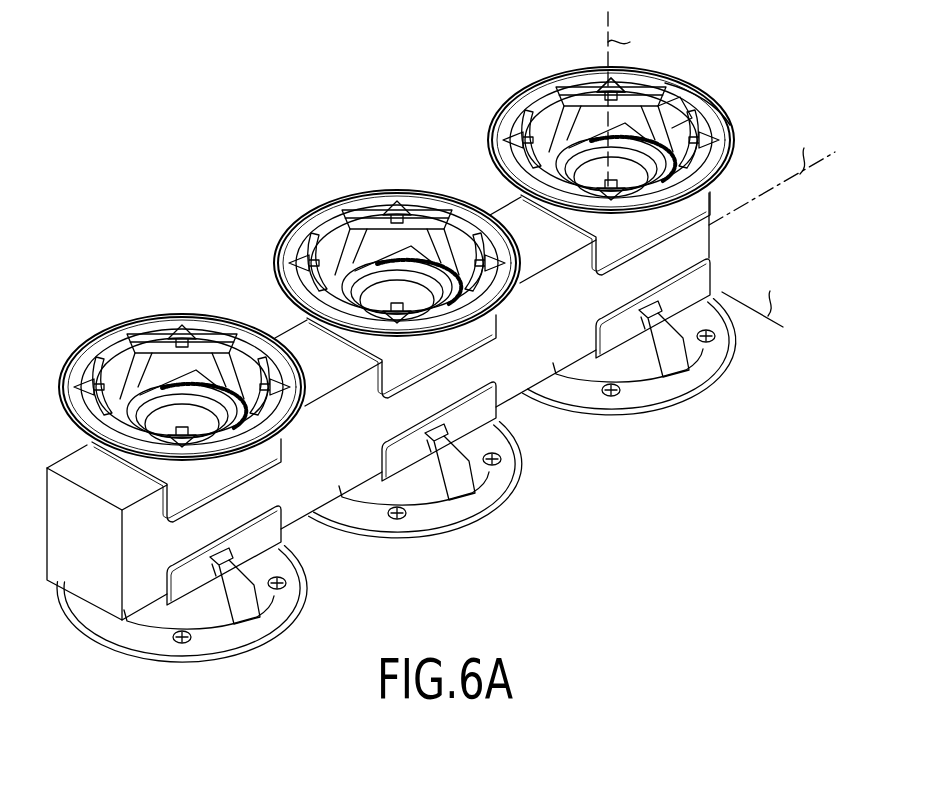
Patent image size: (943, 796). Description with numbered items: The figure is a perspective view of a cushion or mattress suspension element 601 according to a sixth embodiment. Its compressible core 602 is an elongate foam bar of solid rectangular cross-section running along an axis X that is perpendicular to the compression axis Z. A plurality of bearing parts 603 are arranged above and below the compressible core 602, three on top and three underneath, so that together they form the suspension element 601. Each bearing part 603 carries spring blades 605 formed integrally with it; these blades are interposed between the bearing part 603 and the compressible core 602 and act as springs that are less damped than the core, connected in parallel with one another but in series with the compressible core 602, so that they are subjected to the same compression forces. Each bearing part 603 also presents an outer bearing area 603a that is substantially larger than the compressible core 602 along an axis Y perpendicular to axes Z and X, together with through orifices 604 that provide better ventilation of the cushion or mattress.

The cushion or mattress suspension element 601 is at (212, 122).
The compressible core 602 is at (694, 238).
The bearing part 603 is at (516, 97).
The outer bearing area 603a is at (714, 104).
The through orifice 604 is at (604, 74).
The spring blade 605 is at (668, 120).